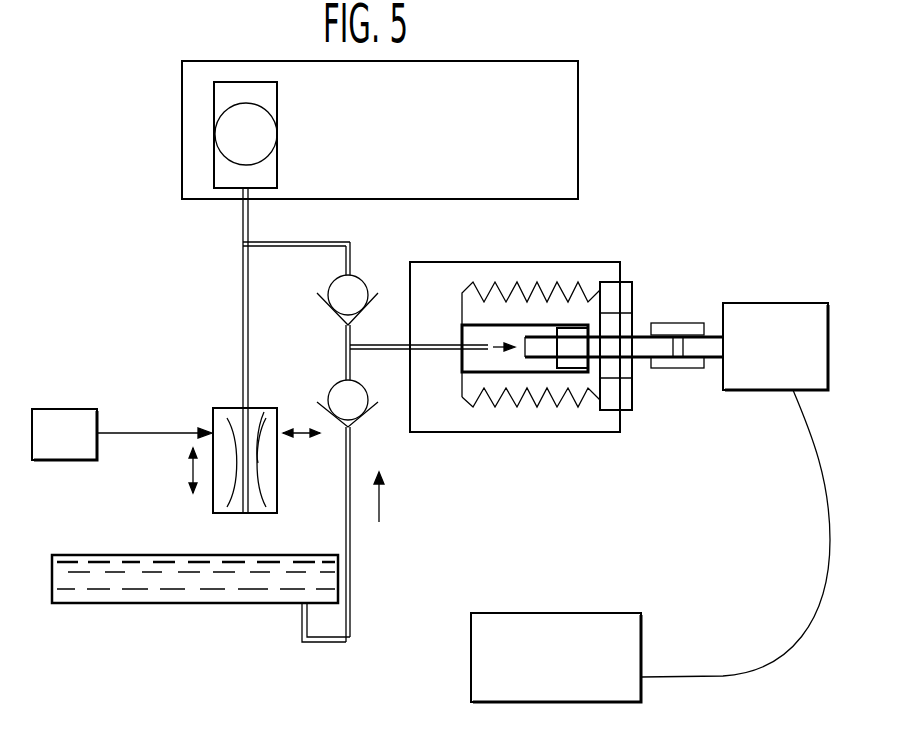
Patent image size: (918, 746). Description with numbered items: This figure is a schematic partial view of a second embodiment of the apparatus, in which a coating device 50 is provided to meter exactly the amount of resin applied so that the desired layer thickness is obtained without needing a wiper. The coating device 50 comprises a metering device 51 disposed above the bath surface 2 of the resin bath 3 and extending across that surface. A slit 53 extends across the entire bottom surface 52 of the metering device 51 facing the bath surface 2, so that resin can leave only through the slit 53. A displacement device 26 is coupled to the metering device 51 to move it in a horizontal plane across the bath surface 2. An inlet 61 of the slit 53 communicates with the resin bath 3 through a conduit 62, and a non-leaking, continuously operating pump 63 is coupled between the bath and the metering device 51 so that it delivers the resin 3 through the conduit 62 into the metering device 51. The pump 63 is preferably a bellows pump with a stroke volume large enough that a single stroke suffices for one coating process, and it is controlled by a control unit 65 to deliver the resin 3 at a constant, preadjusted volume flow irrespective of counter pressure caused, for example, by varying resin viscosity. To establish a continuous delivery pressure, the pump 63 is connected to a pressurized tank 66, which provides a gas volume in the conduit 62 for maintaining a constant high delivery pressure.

The bath surface 2 is at (108, 553).
The resin bath 3 is at (278, 590).
The displacement device 26 is at (62, 408).
The coating device 50 is at (200, 303).
The metering device 51 is at (213, 416).
The bottom surface 52 is at (228, 513).
The slit 53 is at (260, 513).
The inlet 61 is at (253, 418).
The conduit 62 is at (249, 332).
The pump 63 is at (504, 432).
The control unit 65 is at (471, 655).
The pressurized tank 66 is at (278, 134).